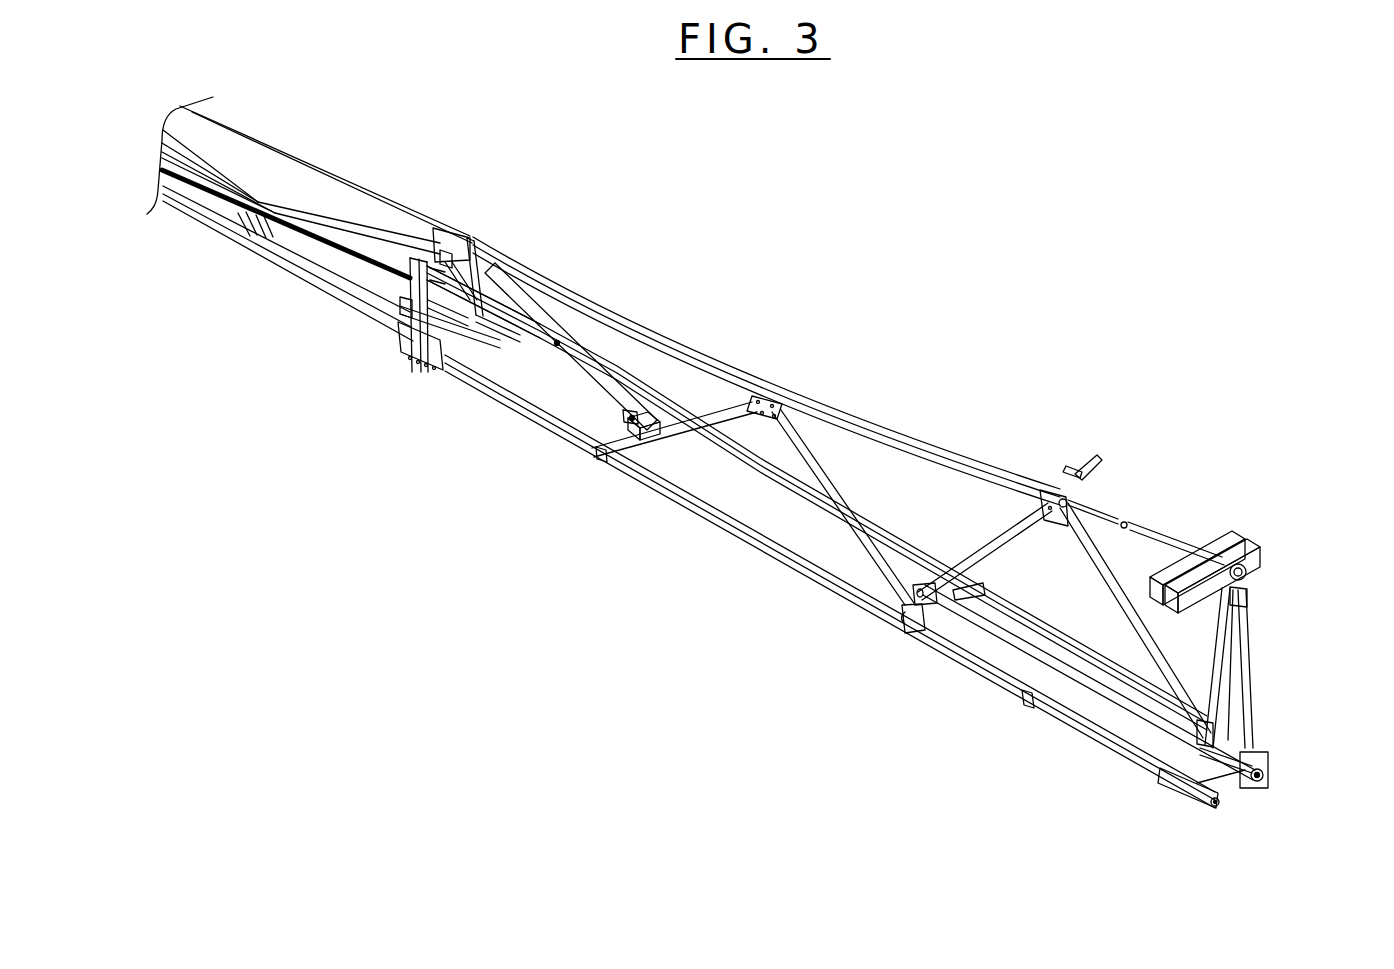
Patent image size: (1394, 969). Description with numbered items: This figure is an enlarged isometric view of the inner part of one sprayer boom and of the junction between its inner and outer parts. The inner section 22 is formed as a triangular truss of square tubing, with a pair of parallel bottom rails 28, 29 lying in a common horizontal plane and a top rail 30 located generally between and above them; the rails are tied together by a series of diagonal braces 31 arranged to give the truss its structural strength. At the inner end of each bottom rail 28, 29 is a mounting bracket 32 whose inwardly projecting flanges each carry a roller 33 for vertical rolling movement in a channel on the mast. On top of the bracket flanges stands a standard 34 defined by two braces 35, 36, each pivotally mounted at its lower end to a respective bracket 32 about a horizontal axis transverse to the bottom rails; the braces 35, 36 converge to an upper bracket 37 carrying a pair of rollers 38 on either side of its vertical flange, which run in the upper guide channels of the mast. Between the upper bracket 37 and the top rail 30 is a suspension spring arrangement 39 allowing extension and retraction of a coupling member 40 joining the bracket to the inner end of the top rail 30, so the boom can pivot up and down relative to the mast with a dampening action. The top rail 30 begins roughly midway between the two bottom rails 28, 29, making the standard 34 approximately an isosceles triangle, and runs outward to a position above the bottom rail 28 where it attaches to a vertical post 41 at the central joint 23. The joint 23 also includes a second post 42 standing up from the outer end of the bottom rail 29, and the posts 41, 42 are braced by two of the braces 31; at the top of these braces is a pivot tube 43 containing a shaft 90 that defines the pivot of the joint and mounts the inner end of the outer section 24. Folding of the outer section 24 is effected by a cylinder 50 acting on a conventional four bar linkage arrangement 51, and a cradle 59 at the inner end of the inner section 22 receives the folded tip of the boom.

The inner section 22 is at (841, 522).
The central joint 23 is at (495, 240).
The outer section 24 is at (341, 157).
The bottom rail 28 is at (651, 494).
The bottom rail 29 is at (773, 494).
The top rail 30 is at (691, 357).
The diagonal braces 31 is at (618, 363).
The mounting bracket 32 is at (1267, 750).
The roller 33 is at (1227, 800).
The standard 34 is at (1214, 693).
The brace 35 is at (1207, 710).
The brace 36 is at (1252, 678).
The upper bracket 37 is at (1250, 597).
The rollers 38 is at (1257, 567).
The suspension spring arrangement 39 is at (1217, 520).
The coupling member 40 is at (1090, 497).
The vertical post 41 is at (423, 344).
The second post 42 is at (497, 304).
The pivot tube 43 is at (433, 230).
The cylinder 50 is at (571, 344).
The four bar linkage arrangement 51 is at (453, 250).
The cradle 59 is at (1073, 463).
The shaft 90 is at (407, 308).